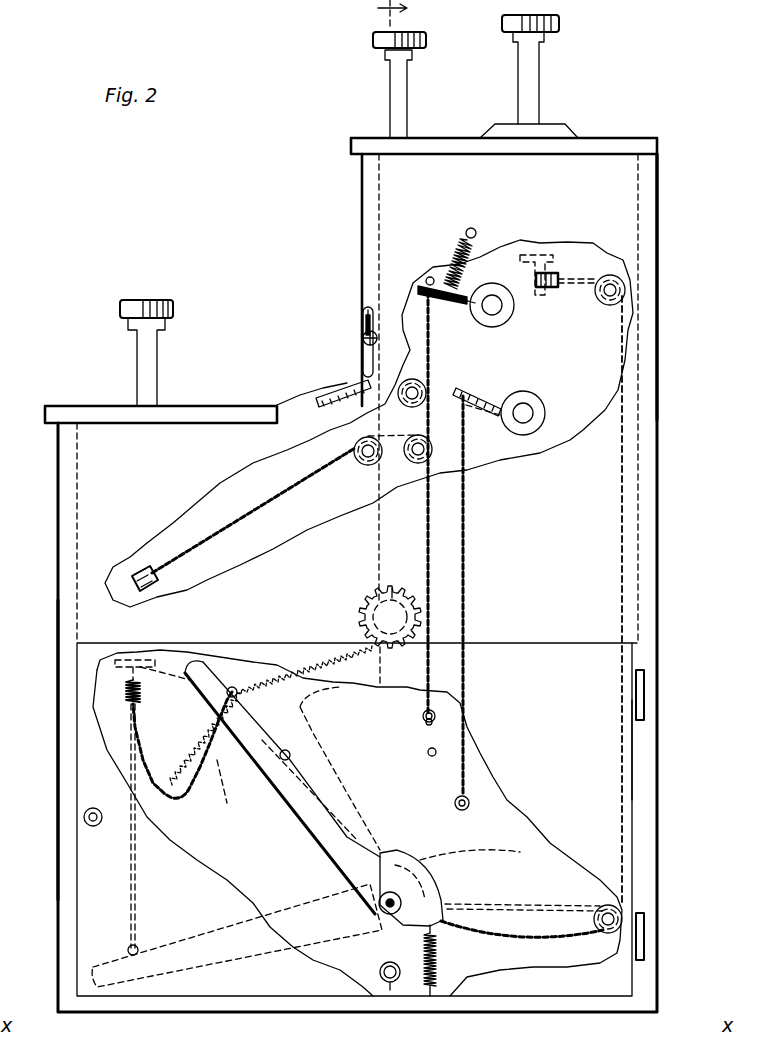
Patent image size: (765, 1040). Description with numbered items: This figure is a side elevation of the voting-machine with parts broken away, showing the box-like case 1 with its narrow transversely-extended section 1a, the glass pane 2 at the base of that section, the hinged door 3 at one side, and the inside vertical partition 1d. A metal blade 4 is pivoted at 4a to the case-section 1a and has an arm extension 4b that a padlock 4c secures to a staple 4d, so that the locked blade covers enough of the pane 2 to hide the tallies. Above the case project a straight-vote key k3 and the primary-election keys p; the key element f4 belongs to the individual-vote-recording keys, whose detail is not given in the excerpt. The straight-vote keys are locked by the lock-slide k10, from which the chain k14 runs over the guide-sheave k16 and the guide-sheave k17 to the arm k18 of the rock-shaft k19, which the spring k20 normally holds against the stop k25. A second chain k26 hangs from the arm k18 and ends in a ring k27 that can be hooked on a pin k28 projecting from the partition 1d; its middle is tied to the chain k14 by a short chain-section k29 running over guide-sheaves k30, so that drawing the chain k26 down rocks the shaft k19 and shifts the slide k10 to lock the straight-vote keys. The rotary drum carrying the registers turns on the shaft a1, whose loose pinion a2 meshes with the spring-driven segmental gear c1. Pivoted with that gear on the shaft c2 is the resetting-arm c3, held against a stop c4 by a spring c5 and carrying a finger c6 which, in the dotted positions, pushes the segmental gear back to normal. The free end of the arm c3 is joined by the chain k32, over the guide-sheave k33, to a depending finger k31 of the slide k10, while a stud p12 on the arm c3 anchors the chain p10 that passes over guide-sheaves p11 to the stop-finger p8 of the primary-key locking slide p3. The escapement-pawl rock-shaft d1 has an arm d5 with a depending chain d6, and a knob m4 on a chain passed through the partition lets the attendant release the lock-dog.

The adjusting knob shaft f4 is at (392, 106).
The primary-election key p is at (533, 62).
The straight-vote key k3 is at (146, 354).
The case 1 is at (58, 737).
The case-section 1a is at (657, 300).
The partition 1d is at (600, 380).
The glass pane 2 is at (320, 407).
The hinged door 3 is at (600, 740).
The metal blade 4 is at (345, 382).
The pivot 4a is at (373, 366).
The arm extension 4b is at (369, 306).
The padlock 4c is at (366, 338).
The staple 4d is at (374, 331).
The lock-slide k10 is at (152, 660).
The chain k14 is at (290, 513).
The guide-sheave k16 is at (148, 572).
The guide-sheave k17 is at (420, 392).
The arm k18 is at (462, 300).
The rock-shaft k19 is at (500, 308).
The spring k20 is at (447, 283).
The stop k25 is at (430, 277).
The chain k26 is at (436, 341).
The ring k27 is at (423, 733).
The pin k28 is at (434, 756).
The chain-section k29 is at (394, 432).
The guide-sheaves k30 is at (402, 462).
The depending finger k31 is at (160, 680).
The chain k32 is at (185, 760).
The guide-sheave k33 is at (128, 702).
The locking slide p3 is at (553, 250).
The stop-finger p8 is at (562, 262).
The chain p10 is at (625, 343).
The guide-sheaves p11 is at (556, 292).
The stud p12 is at (428, 892).
The rock-shaft d1 is at (528, 408).
The arm d5 is at (466, 440).
The chain d6 is at (463, 746).
The drum shaft a1 is at (365, 622).
The pinion a2 is at (393, 590).
The segmental gear c1 is at (340, 768).
The shaft c2 is at (378, 937).
The resetting-arm c3 is at (312, 842).
The stop c4 is at (283, 758).
The spring c5 is at (438, 958).
The finger c6 is at (430, 870).
The knob m4 is at (386, 985).